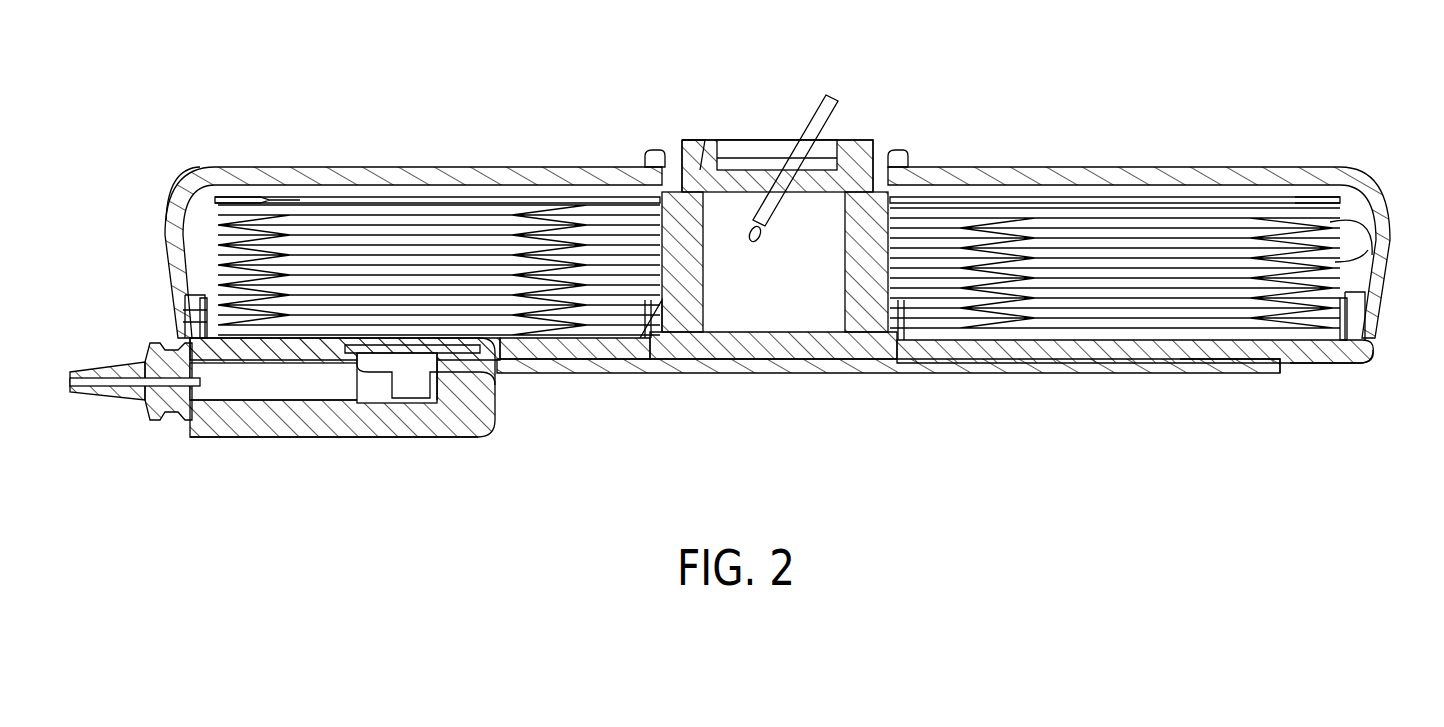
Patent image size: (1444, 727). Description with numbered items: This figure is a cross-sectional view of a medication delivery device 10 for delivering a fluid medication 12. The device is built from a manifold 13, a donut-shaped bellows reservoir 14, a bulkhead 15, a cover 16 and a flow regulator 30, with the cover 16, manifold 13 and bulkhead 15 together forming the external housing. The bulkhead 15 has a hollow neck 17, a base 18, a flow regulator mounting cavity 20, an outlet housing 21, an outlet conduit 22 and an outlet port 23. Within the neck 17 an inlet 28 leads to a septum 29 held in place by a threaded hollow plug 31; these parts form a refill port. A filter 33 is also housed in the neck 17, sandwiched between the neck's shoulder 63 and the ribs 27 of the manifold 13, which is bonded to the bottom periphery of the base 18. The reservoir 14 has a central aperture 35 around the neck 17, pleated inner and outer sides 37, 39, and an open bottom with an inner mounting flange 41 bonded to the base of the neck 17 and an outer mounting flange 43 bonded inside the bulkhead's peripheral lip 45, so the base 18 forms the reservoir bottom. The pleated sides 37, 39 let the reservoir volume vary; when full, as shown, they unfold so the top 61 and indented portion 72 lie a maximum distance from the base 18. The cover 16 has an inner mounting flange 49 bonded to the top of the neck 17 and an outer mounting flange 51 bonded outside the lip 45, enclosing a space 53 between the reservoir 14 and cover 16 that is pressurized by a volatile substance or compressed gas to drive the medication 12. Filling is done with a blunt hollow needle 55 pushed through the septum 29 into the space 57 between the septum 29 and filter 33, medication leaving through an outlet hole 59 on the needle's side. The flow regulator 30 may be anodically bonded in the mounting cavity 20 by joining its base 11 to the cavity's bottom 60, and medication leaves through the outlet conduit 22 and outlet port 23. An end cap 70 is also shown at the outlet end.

The medication delivery device 10 is at (420, 98).
The base 11 is at (488, 384).
The fluid medication 12 is at (385, 232).
The manifold 13 is at (1072, 374).
The bellows reservoir 14 is at (437, 220).
The bulkhead 15 is at (1305, 362).
The cover 16 is at (1292, 172).
The hollow neck 17 is at (645, 158).
The base 18 is at (1212, 365).
The flow regulator mounting cavity 20 is at (490, 405).
The outlet housing 21 is at (312, 425).
The outlet conduit 22 is at (262, 385).
The outlet port 23 is at (150, 415).
The ribs 27 is at (985, 372).
The inlet 28 is at (745, 143).
The septum 29 is at (752, 178).
The flow regulator 30 is at (448, 400).
The threaded hollow plug 31 is at (848, 255).
The filter 33 is at (800, 360).
The central aperture 35 is at (618, 315).
The pleated inner side 37 is at (1358, 222).
The pleated outer side 39 is at (965, 205).
The inner mounting flange 41 is at (636, 345).
The outer mounting flange 43 is at (186, 300).
The peripheral lip 45 is at (180, 302).
The inner mounting flange 49 is at (688, 140).
The outer mounting flange 51 is at (175, 316).
The space 53 is at (257, 195).
The hollow needle 55 is at (836, 112).
The space 57 is at (738, 300).
The outlet hole 59 is at (758, 242).
The bottom 60 is at (372, 390).
The top 61 is at (1010, 195).
The shoulder 63 is at (665, 360).
The end cap 70 is at (180, 205).
The indented portion 72 is at (393, 200).